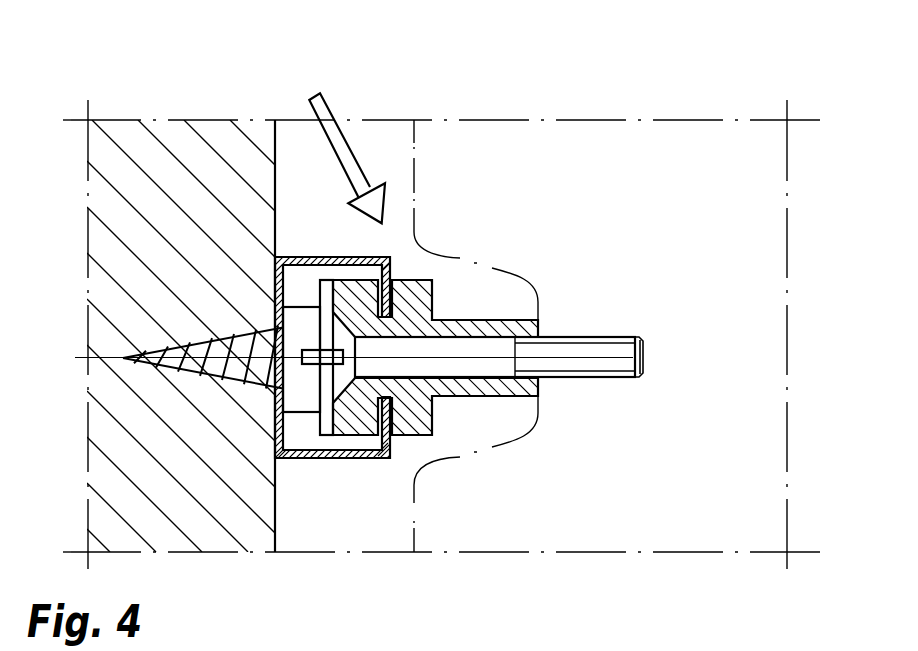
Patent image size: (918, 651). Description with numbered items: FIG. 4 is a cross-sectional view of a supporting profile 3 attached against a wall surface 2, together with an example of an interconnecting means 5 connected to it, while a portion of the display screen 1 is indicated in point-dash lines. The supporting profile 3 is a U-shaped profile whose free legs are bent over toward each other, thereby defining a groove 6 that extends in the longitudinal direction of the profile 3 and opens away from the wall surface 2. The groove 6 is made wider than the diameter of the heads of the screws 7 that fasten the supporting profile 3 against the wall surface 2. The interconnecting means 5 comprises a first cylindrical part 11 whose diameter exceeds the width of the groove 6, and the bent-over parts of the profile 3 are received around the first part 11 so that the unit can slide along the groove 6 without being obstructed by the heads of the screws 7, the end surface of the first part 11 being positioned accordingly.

The display screen 1 is at (415, 503).
The wall surface 2 is at (277, 510).
The supporting profile 3 is at (297, 459).
The interconnecting means 5 is at (314, 89).
The groove 6 is at (398, 281).
The screws 7 is at (193, 371).
The first cylindrical part 11 is at (346, 303).